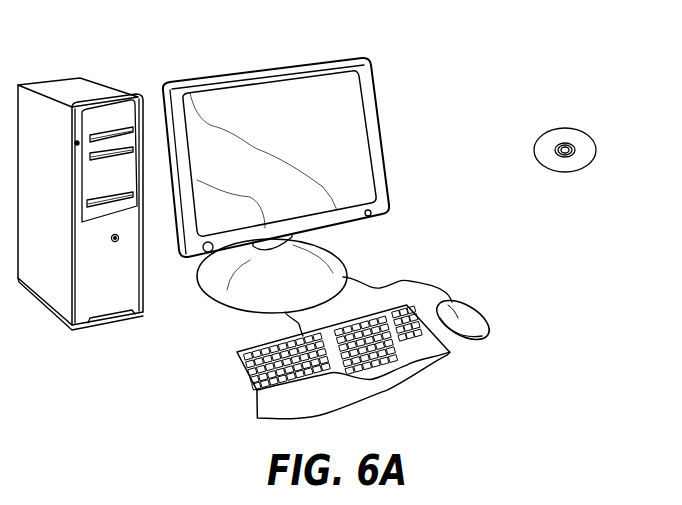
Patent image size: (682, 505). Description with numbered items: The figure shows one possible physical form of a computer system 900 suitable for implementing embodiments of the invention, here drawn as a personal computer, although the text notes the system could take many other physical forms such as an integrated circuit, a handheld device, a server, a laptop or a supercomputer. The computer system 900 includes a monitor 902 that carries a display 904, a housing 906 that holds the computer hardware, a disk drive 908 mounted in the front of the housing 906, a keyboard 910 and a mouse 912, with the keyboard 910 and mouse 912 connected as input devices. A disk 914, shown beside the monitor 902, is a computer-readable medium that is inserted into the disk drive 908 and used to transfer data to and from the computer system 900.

The computer system 900 is at (500, 38).
The monitor 902 is at (320, 185).
The display 904 is at (340, 98).
The housing 906 is at (104, 176).
The disk drive 908 is at (135, 202).
The keyboard 910 is at (245, 387).
The mouse 912 is at (481, 311).
The disk 914 is at (578, 128).